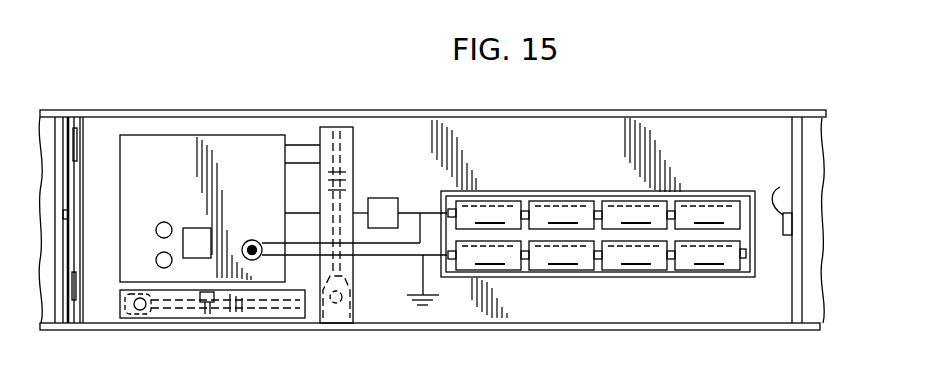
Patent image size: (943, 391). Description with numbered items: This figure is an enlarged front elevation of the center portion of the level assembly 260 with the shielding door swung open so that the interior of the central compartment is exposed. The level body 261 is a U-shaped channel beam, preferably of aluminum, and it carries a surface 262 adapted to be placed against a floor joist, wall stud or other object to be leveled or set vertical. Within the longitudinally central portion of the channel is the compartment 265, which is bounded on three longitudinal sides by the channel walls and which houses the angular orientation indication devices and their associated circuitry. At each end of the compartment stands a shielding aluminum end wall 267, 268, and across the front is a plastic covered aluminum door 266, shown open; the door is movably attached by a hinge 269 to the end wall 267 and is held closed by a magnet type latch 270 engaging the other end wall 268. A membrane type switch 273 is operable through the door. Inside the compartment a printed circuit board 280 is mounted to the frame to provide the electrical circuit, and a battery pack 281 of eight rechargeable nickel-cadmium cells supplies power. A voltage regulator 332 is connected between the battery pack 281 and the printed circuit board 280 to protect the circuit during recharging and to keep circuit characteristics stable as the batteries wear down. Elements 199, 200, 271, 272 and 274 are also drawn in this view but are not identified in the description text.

The control column 199 is at (358, 150).
The drive unit 200 is at (115, 301).
The level assembly 260 is at (597, 104).
The level body 261 is at (86, 112).
The surface 262 is at (247, 326).
The compartment 265 is at (440, 148).
The door 266 is at (67, 185).
The end wall 267 is at (94, 118).
The end wall 268 is at (808, 93).
The hinge 269 is at (80, 140).
The magnet type latch 270 is at (67, 220).
The push buttons 271 is at (170, 254).
The switch block 272 is at (204, 240).
The membrane type switch 273 is at (270, 149).
The connector terminal 274 is at (257, 258).
The printed circuit board 280 is at (274, 141).
The battery pack 281 is at (615, 192).
The voltage regulator 332 is at (377, 203).